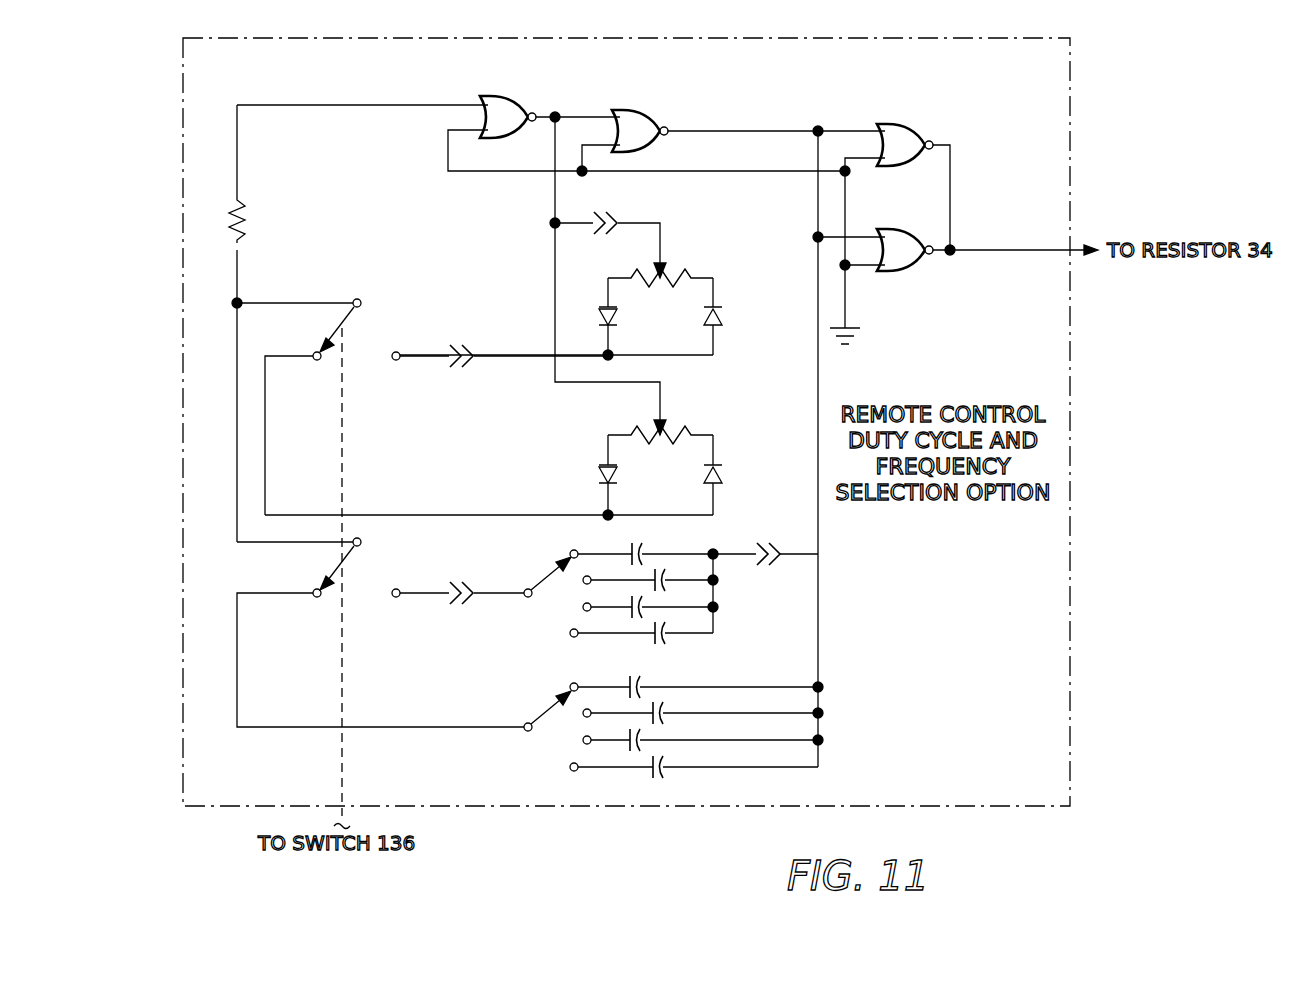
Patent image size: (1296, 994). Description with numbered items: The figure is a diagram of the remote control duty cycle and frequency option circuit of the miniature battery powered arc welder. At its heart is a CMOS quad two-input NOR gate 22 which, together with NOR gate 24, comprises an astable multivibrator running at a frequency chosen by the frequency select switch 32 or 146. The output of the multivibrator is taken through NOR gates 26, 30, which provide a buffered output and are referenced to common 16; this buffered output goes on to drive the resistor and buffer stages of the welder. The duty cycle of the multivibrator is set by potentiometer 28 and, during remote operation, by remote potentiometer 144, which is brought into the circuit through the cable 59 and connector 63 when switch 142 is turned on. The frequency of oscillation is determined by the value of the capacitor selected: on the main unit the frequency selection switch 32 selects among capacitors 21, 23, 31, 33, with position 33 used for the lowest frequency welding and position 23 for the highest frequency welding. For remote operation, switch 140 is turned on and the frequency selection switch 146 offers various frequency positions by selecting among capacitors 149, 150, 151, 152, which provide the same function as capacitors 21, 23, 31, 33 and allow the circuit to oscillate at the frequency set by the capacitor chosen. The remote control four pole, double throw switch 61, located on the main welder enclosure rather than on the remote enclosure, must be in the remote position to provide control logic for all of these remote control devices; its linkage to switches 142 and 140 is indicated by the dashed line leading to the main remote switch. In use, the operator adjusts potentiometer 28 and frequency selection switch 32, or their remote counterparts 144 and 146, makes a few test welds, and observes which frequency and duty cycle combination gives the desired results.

The nor gate 22 is at (512, 97).
The nor gate 24 is at (645, 110).
The nor gate 26 is at (910, 123).
The nor gate 30 is at (905, 273).
The common 16 is at (858, 340).
The cable 59 is at (640, 222).
The remote potentiometer 144 is at (682, 272).
The potentiometer 28 is at (682, 430).
The switch 142 is at (340, 322).
The connector 63 is at (468, 353).
The switch 61 is at (342, 430).
The switch 140 is at (340, 566).
The frequency selection switch 146 is at (542, 580).
The capacitor 149 is at (628, 546).
The capacitor 150 is at (665, 590).
The capacitor 151 is at (622, 618).
The capacitor 152 is at (665, 640).
The frequency selection switch 32 is at (545, 712).
The capacitor 33 is at (628, 682).
The capacitor 31 is at (666, 720).
The capacitor 21 is at (620, 752).
The capacitor 23 is at (666, 775).